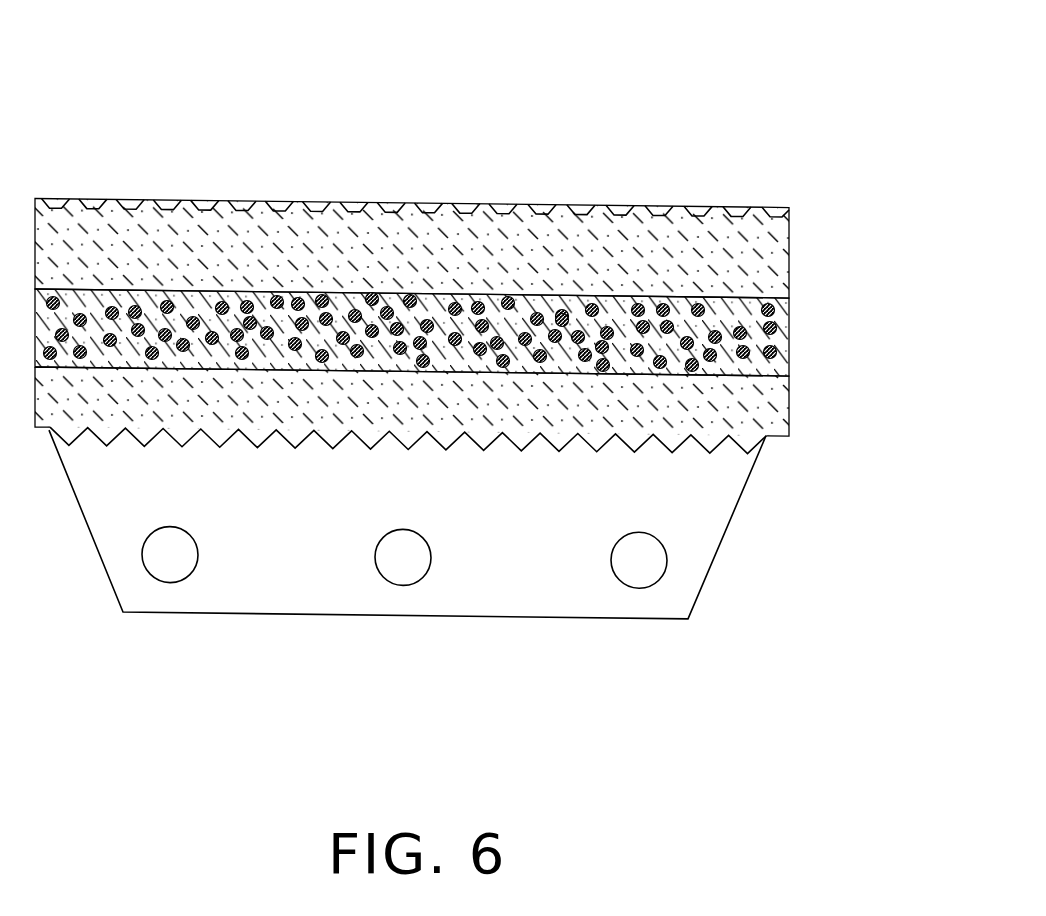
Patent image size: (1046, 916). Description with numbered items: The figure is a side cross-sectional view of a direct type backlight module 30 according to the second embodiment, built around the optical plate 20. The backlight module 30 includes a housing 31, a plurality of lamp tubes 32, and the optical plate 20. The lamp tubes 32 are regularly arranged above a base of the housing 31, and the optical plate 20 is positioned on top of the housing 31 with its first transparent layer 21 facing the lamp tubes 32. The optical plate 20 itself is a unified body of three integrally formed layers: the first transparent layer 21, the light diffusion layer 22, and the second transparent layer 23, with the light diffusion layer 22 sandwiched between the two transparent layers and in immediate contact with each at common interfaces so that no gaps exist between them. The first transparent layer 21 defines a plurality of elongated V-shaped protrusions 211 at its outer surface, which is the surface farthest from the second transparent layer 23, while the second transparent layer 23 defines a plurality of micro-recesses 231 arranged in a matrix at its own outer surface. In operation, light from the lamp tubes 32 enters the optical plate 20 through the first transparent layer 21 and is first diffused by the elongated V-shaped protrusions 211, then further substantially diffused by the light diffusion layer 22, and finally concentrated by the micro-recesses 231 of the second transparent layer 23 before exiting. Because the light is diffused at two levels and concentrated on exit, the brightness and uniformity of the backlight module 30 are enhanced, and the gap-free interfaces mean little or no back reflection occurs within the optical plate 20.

The direct type backlight module 30 is at (425, 49).
The optical plate 20 is at (806, 205).
The first transparent layer 21 is at (789, 391).
The elongated V-shaped protrusions 211 is at (703, 445).
The light diffusion layer 22 is at (789, 328).
The second transparent layer 23 is at (790, 256).
The micro-recesses 231 is at (448, 217).
The housing 31 is at (723, 540).
The lamp tubes 32 is at (647, 572).